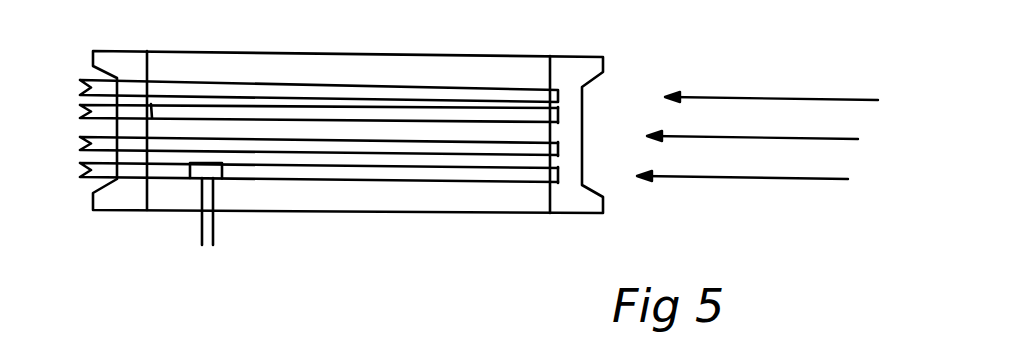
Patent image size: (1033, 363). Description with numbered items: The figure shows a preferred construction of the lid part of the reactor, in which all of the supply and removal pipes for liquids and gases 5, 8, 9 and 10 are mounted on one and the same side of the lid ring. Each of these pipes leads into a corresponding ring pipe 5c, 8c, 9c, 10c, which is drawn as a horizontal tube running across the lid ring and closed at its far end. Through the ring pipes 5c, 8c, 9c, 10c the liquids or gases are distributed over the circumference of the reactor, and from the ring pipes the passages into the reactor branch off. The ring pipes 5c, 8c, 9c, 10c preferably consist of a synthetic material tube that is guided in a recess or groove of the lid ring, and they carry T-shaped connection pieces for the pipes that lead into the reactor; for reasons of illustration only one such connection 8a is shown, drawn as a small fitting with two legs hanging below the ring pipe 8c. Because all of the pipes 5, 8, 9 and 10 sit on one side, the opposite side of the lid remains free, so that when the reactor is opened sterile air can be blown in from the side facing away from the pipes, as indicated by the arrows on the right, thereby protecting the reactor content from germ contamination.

The supply and removal pipe 5 is at (75, 88).
The ring pipe 5c is at (163, 88).
The supply and removal pipe 9 is at (80, 112).
The ring pipe 9c is at (488, 113).
The supply and removal pipe 10 is at (82, 145).
The ring pipe 10c is at (410, 143).
The supply and removal pipe 8 is at (74, 173).
The ring pipe 8c is at (488, 173).
The connection 8a is at (214, 228).